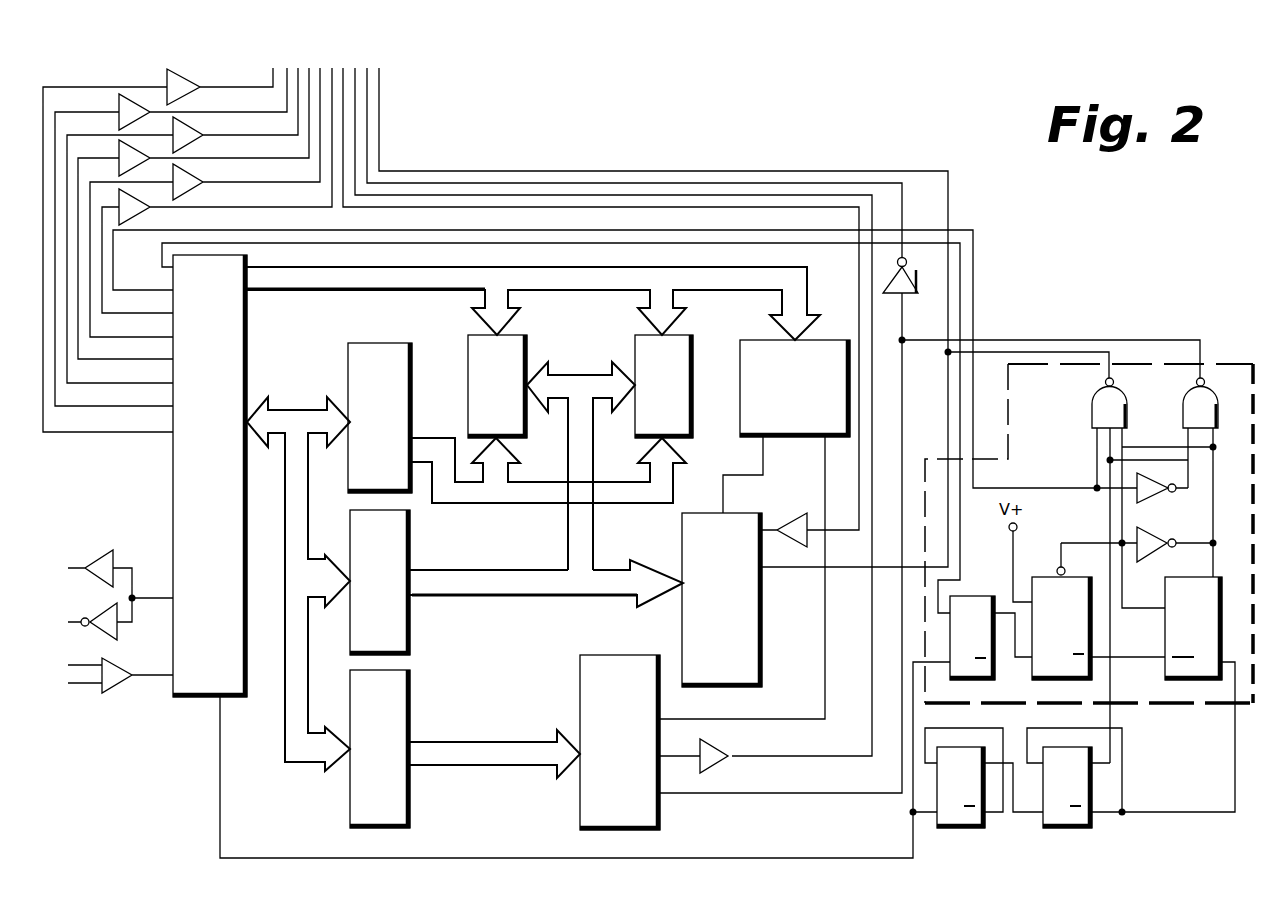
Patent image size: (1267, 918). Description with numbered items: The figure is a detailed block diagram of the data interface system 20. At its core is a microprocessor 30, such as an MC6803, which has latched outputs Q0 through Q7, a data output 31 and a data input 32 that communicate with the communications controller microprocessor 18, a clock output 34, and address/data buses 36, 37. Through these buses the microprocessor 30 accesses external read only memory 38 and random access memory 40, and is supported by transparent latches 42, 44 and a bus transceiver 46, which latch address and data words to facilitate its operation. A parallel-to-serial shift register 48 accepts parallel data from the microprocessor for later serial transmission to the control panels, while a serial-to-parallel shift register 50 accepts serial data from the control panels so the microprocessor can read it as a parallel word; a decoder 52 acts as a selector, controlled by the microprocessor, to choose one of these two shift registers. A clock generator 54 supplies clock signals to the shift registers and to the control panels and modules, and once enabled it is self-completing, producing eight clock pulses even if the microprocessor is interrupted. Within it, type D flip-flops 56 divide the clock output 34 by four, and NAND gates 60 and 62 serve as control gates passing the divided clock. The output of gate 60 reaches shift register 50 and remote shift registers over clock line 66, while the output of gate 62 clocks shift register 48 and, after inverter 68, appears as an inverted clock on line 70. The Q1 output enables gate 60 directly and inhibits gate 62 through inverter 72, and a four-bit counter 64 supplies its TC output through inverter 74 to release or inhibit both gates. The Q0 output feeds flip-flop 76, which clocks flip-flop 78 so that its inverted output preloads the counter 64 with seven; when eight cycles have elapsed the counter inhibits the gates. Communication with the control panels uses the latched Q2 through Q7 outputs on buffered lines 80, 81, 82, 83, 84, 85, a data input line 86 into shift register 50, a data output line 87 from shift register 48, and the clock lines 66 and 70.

The communications controller microprocessor 18 is at (54, 624).
The data interface system 20 is at (1124, 247).
The microprocessor 30 is at (250, 340).
The data output 31 is at (150, 597).
The data input 32 is at (152, 674).
The clock output 34 is at (222, 795).
The address/data bus 36 is at (283, 408).
The address/data bus 37 is at (380, 294).
The read only memory 38 is at (533, 342).
The random access memory 40 is at (633, 338).
The transparent latch 42 is at (380, 343).
The transparent latch 44 is at (413, 690).
The bus transceiver 46 is at (413, 543).
The parallel-to-serial shift register 48 is at (580, 657).
The serial-to-parallel shift register 50 is at (683, 553).
The decoder 52 is at (738, 340).
The clock generator 54 is at (1182, 707).
The type D flip-flop 56 is at (968, 833).
The NAND gate 60 is at (1092, 410).
The NAND gate 62 is at (1183, 417).
The 4 bit counter 64 is at (1165, 642).
The clock line 66 is at (950, 210).
The inverter 68 is at (908, 296).
The clock line 70 is at (903, 203).
The inverter 72 is at (1157, 495).
The inverter 74 is at (1166, 548).
The flip-flop 76 is at (982, 596).
The flip-flop 78 is at (1040, 577).
The buffered line 80 is at (263, 208).
The buffered line 81 is at (263, 185).
The buffered line 82 is at (263, 161).
The buffered line 83 is at (263, 137).
The buffered line 84 is at (265, 113).
The buffered line 85 is at (252, 90).
The data input line 86 is at (380, 208).
The data output line 87 is at (473, 195).